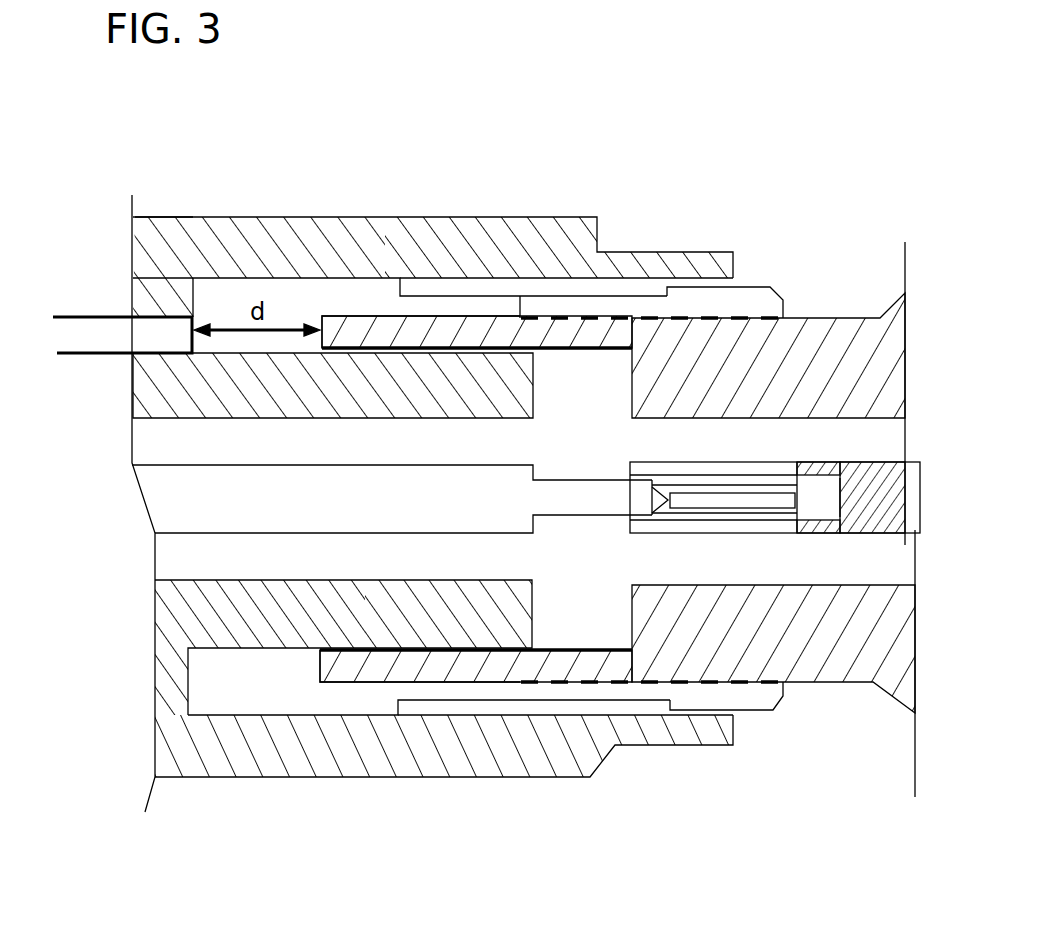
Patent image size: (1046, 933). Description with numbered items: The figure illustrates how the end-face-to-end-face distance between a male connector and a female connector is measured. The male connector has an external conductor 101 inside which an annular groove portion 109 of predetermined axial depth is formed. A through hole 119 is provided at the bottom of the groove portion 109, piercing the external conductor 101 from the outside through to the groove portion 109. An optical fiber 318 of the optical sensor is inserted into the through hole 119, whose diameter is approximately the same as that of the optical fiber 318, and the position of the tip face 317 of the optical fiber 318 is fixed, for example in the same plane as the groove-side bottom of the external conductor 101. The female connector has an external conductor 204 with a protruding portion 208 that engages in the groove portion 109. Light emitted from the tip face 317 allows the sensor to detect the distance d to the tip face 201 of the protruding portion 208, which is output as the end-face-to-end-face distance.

The external conductor 101 is at (592, 230).
The groove portion 109 is at (282, 298).
The through hole 119 is at (145, 312).
The tip face 201 is at (323, 330).
The external conductor 204 is at (790, 328).
The protruding portion 208 is at (413, 327).
The tip face 317 is at (193, 317).
The optical fiber 318 is at (107, 328).